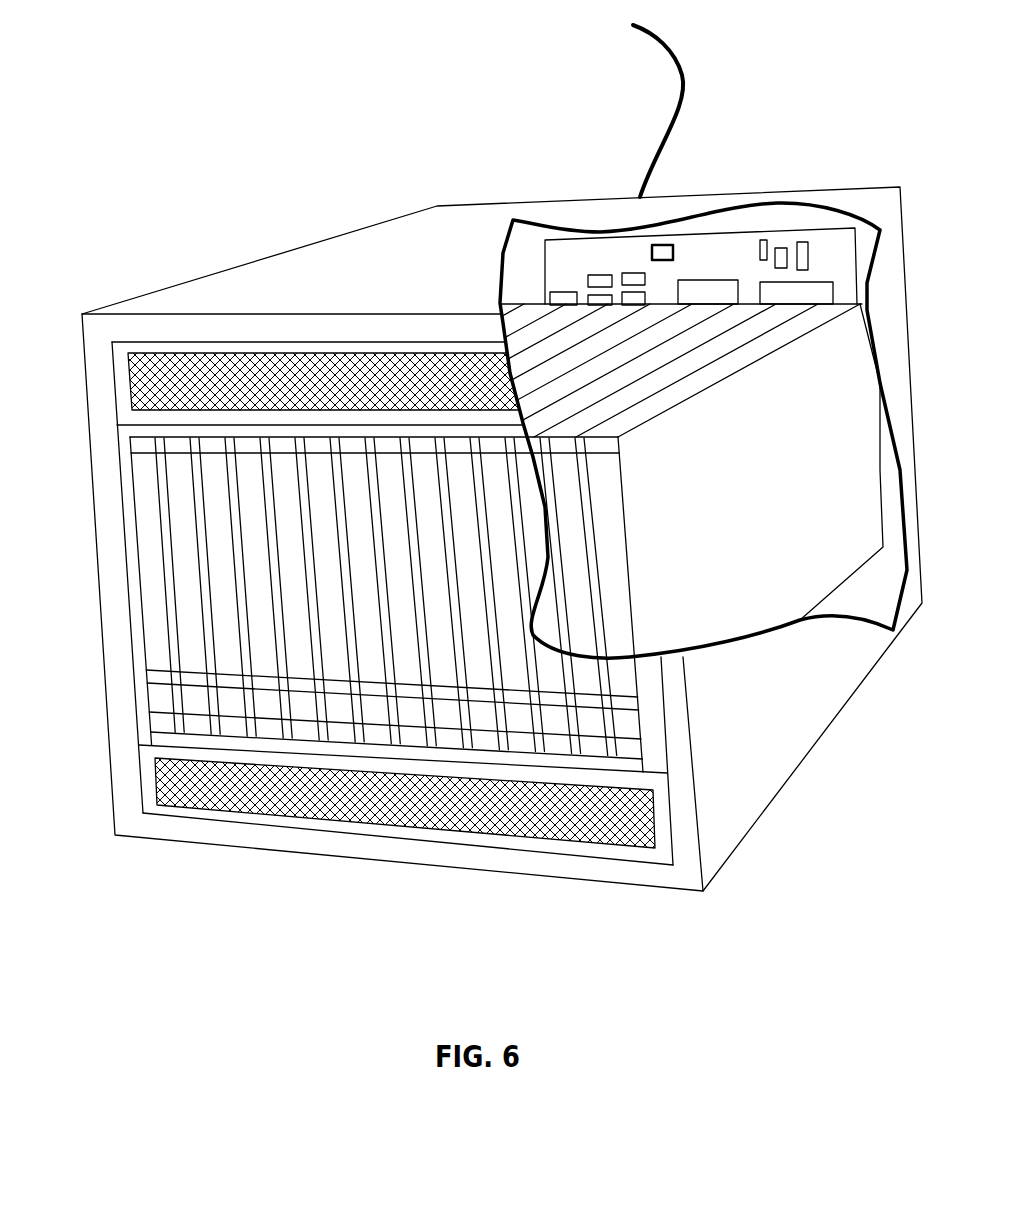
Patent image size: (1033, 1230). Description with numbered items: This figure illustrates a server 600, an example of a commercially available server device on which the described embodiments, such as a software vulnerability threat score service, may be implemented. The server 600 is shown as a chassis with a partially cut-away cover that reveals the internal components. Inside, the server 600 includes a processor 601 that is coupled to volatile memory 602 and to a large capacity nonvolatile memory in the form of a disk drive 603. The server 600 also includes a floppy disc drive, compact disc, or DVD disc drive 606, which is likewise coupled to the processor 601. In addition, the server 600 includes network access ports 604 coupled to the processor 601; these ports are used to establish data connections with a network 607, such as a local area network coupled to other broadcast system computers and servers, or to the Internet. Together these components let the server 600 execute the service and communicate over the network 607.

The server 600 is at (502, 456).
The processor 601 is at (703, 293).
The volatile memory 602 is at (818, 293).
The disk drive 603 is at (223, 533).
The network access ports 604 is at (567, 290).
The disc drive 606 is at (192, 592).
The network 607 is at (675, 52).